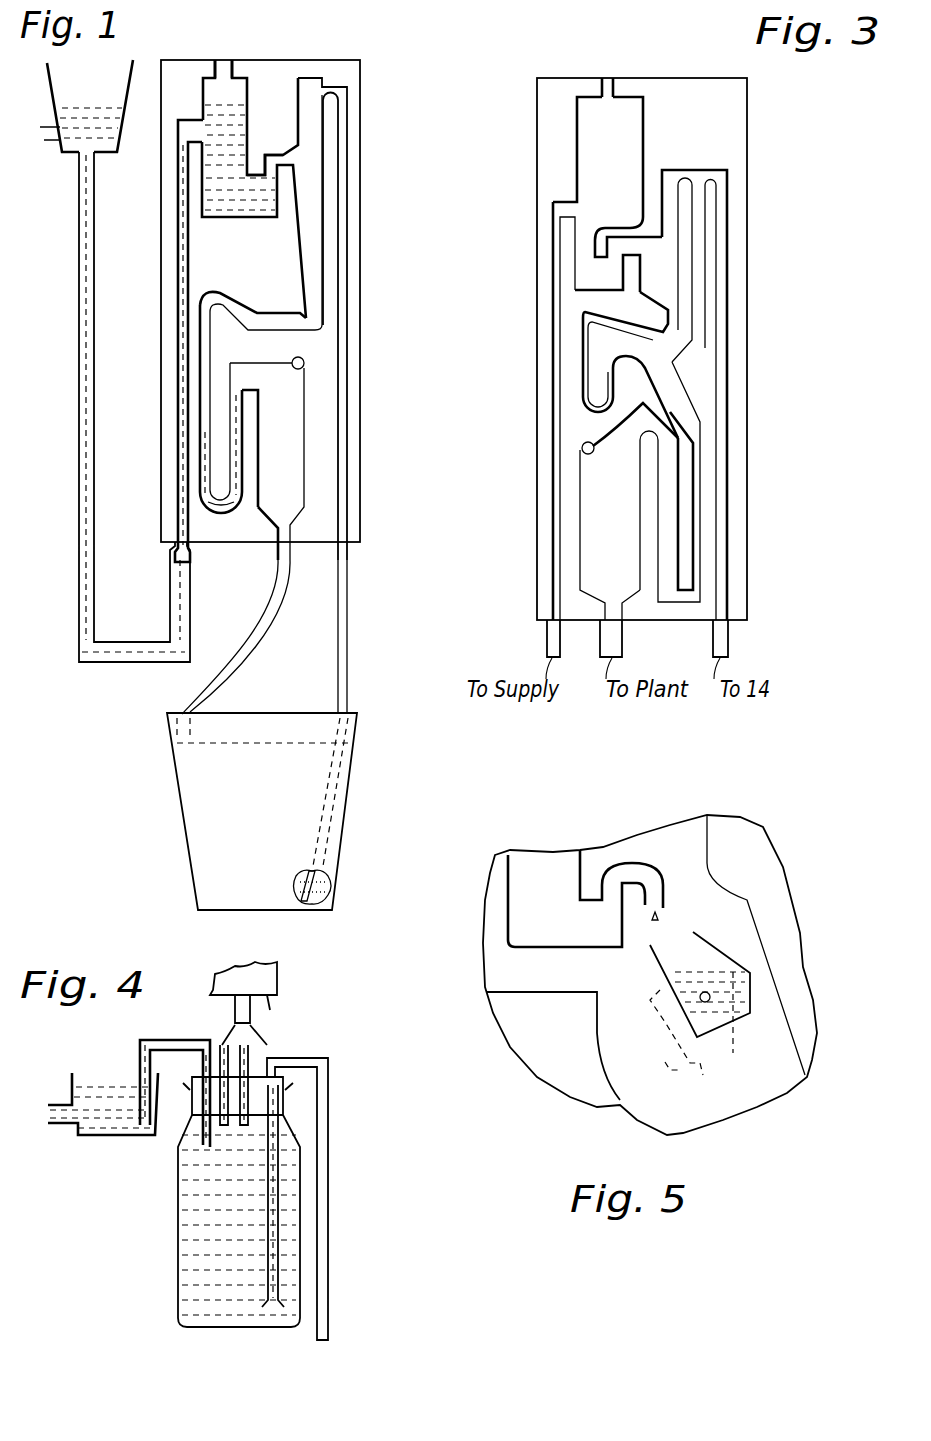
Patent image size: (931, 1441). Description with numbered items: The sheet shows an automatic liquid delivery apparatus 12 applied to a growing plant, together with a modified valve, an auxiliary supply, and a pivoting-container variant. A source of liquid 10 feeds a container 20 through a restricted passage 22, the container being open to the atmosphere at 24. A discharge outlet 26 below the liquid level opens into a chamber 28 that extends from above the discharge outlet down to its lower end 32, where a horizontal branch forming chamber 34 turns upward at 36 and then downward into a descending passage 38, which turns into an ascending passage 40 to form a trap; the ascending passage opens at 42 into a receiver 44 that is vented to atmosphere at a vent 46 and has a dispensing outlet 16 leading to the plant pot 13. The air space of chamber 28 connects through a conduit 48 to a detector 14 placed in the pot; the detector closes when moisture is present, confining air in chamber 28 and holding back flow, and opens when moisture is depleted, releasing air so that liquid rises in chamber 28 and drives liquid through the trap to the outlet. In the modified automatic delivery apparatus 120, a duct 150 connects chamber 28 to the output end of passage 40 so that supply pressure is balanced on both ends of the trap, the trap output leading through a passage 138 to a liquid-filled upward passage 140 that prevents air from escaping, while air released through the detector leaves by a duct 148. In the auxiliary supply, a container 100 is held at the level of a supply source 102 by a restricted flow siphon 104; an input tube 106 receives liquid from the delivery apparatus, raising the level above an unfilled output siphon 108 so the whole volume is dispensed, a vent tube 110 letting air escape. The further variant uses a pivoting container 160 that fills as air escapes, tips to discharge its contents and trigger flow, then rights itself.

In FIG. 1, the source of liquid 10 is at (101, 84).
In FIG. 1, the automatic liquid delivery apparatus 12 is at (364, 79).
In FIG. 4, the automatic liquid delivery apparatus 12 is at (270, 974).
In FIG. 1, the plant pot 13 is at (187, 783).
In FIG. 1, the detector 14 is at (329, 889).
In FIG. 1, the dispensing outlet 16 is at (282, 566).
In FIG. 1, the container 20 is at (236, 101).
In FIG. 3, the container 20 is at (621, 140).
In FIG. 5, the container 20 is at (552, 865).
In FIG. 1, the restricted passage 22 is at (186, 263).
In FIG. 3, the restricted passage 22 is at (553, 286).
In FIG. 1, the atmospheric opening 24 is at (228, 62).
In FIG. 3, the atmospheric opening 24 is at (608, 75).
In FIG. 1, the discharge outlet 26 is at (256, 162).
In FIG. 3, the discharge outlet 26 is at (618, 252).
In FIG. 1, the chamber 28 is at (312, 107).
In FIG. 3, the chamber 28 is at (670, 281).
In FIG. 5, the chamber 28 is at (731, 935).
In FIG. 1, the lower end of chamber 32 is at (318, 335).
In FIG. 1, the horizontal branch chamber 34 is at (270, 312).
In FIG. 3, the horizontal branch chamber 34 is at (617, 321).
In FIG. 1, the upward turn 36 is at (218, 292).
In FIG. 1, the descending passage 38 is at (206, 343).
In FIG. 3, the descending passage 38 is at (583, 378).
In FIG. 1, the ascending passage 40 is at (246, 490).
In FIG. 3, the ascending passage 40 is at (614, 379).
In FIG. 1, the opening into receiver 42 is at (237, 383).
In FIG. 1, the receiver 44 is at (294, 474).
In FIG. 3, the receiver 44 is at (622, 545).
In FIG. 1, the vent 46 is at (300, 372).
In FIG. 3, the vent 46 is at (590, 455).
In FIG. 1, the conduit 48 is at (346, 180).
In FIG. 4, the container 100 is at (178, 1215).
In FIG. 4, the supply source 102 is at (133, 1137).
In FIG. 4, the restricted flow siphon 104 is at (140, 1060).
In FIG. 4, the input tube 106 is at (267, 1037).
In FIG. 4, the output siphon 108 is at (328, 1130).
In FIG. 4, the vent tube 110 is at (223, 1040).
In FIG. 3, the automatic delivery apparatus 120 is at (748, 118).
In FIG. 3, the passage 138 is at (700, 458).
In FIG. 3, the upward passage 140 is at (672, 533).
In FIG. 3, the duct 148 is at (722, 212).
In FIG. 3, the duct 150 is at (698, 293).
In FIG. 5, the pivoting container 160 is at (670, 1030).